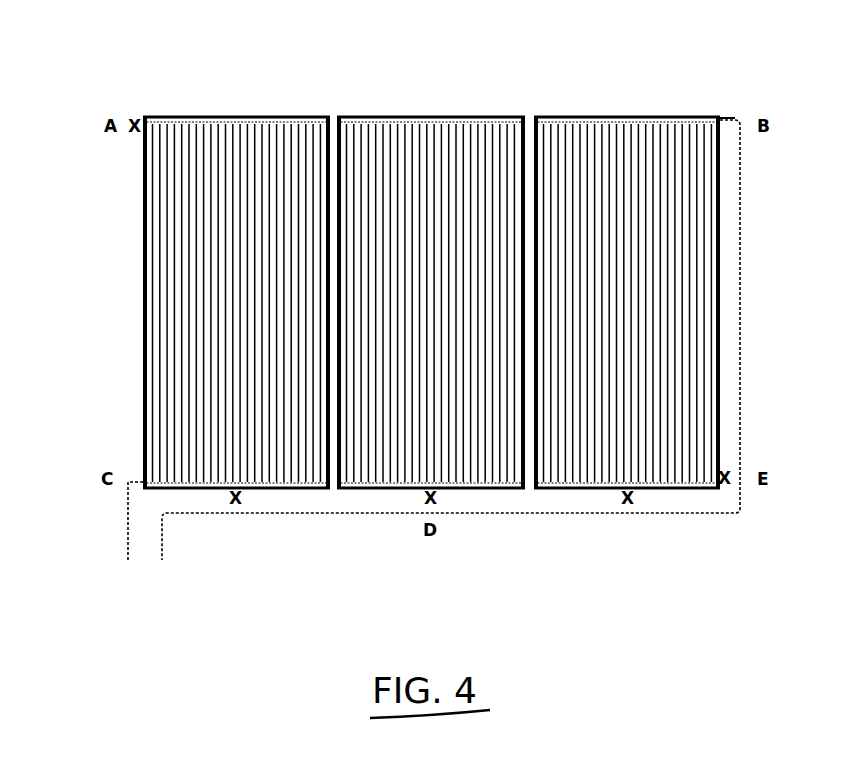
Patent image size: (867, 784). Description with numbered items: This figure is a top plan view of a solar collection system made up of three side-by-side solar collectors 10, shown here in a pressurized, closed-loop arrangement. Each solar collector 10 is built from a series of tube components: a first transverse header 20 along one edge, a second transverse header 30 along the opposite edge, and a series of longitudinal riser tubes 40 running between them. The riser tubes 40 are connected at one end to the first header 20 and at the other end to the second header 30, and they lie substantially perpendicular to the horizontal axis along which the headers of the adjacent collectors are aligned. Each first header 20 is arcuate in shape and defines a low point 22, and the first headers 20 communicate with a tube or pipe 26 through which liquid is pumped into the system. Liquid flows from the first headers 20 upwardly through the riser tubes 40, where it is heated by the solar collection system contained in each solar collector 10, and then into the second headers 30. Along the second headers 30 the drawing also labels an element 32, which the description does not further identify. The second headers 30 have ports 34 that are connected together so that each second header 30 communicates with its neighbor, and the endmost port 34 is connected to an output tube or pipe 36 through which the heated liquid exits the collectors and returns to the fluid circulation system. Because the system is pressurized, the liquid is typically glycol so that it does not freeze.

The solar collector 10 is at (220, 82).
The first transverse header 20 is at (182, 483).
The low point 22 is at (243, 490).
The tube or pipe 26 is at (128, 528).
The second transverse header 30 is at (269, 122).
The top hinge strip 32 is at (232, 122).
The port 34 is at (723, 120).
The output tube or pipe 36 is at (743, 193).
The longitudinal riser tube 40 is at (175, 235).